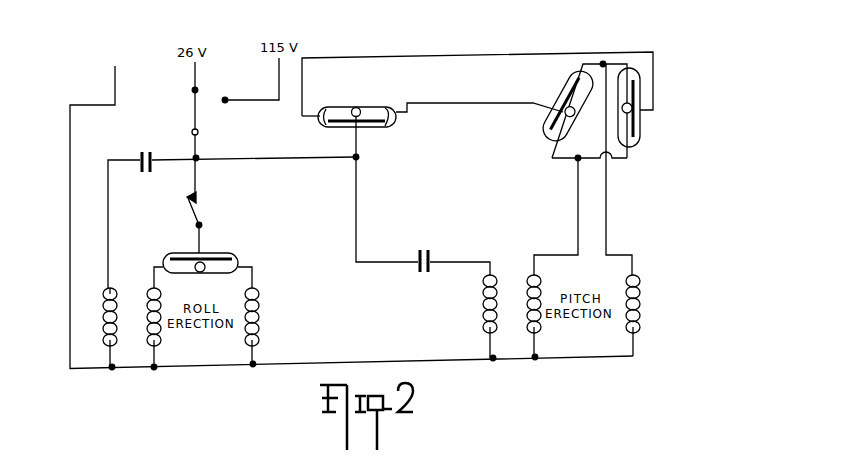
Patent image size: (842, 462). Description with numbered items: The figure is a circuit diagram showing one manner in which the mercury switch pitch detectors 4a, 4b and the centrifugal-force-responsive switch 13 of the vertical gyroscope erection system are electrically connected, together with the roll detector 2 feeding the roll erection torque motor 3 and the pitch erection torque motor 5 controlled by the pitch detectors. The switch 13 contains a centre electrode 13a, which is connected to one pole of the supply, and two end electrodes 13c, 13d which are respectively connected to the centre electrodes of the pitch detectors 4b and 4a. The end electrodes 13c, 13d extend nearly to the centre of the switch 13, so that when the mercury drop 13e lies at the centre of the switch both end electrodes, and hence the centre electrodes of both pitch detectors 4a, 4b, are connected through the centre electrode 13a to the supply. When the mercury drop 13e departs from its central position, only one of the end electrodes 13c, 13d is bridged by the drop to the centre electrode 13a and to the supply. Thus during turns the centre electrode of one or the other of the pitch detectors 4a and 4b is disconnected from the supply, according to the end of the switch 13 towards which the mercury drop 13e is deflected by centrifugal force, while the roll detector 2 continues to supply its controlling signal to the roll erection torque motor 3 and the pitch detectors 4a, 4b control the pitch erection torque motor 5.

The roll detector 2 is at (220, 253).
The roll erection torque motor 3 is at (136, 328).
The pitch erection torque motor 5 is at (518, 318).
The centrifugal-force-responsive switch 13 is at (368, 108).
The centre electrode 13a is at (376, 124).
The end electrode 13c is at (390, 107).
The end electrode 13d is at (325, 124).
The mercury drop 13e is at (353, 108).
The mercury switch pitch detector 4a is at (642, 123).
The mercury switch pitch detector 4b is at (552, 132).